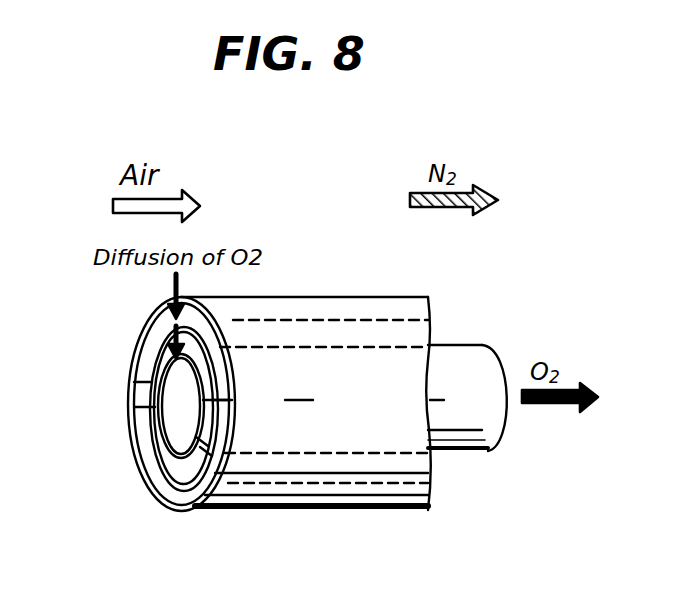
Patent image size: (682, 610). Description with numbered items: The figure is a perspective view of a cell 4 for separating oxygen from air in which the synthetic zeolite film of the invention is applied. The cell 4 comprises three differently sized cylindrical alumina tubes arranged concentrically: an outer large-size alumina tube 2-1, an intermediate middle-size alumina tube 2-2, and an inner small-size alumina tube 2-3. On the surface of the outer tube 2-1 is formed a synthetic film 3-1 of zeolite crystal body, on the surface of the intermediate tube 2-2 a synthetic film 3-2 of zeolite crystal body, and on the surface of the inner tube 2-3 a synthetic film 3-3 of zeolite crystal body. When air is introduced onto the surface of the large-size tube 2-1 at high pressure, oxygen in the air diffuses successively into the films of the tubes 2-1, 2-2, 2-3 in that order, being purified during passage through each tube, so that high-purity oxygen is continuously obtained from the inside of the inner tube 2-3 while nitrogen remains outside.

The cell 4 is at (318, 518).
The outer large-size alumina tube 2-1 is at (143, 327).
The intermediate middle-size alumina tube 2-2 is at (147, 473).
The inner small-size alumina tube 2-3 is at (140, 407).
The synthetic film of zeolite crystal body 3-1 is at (177, 510).
The synthetic film of zeolite crystal body 3-2 is at (140, 450).
The synthetic film of zeolite crystal body 3-3 is at (140, 382).